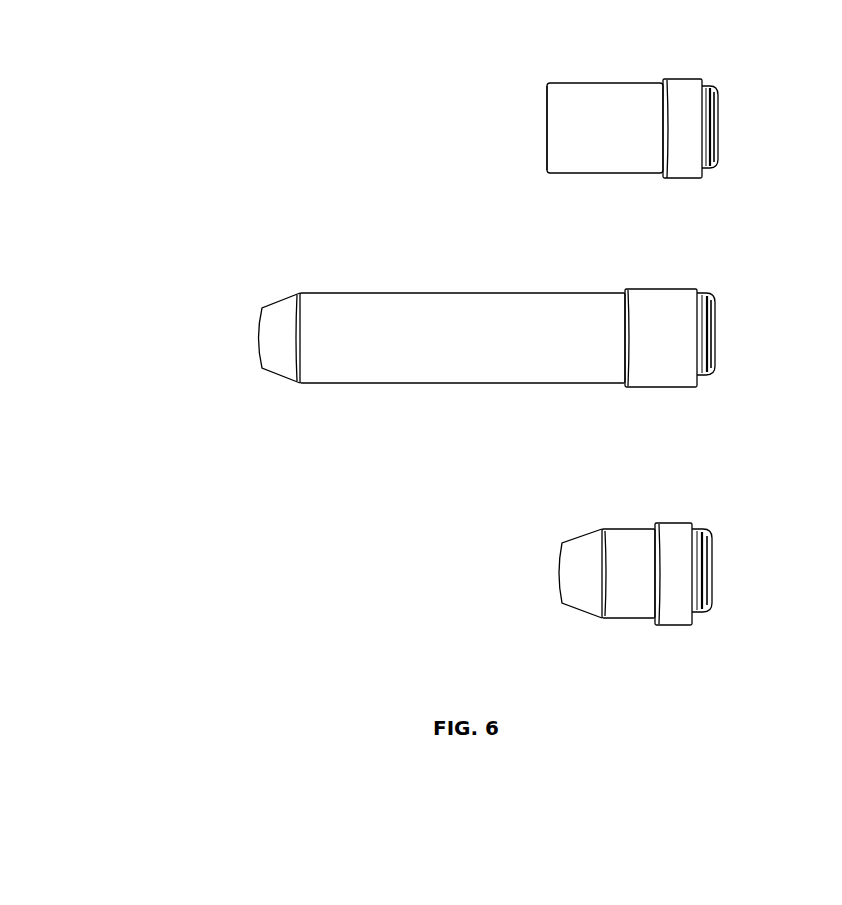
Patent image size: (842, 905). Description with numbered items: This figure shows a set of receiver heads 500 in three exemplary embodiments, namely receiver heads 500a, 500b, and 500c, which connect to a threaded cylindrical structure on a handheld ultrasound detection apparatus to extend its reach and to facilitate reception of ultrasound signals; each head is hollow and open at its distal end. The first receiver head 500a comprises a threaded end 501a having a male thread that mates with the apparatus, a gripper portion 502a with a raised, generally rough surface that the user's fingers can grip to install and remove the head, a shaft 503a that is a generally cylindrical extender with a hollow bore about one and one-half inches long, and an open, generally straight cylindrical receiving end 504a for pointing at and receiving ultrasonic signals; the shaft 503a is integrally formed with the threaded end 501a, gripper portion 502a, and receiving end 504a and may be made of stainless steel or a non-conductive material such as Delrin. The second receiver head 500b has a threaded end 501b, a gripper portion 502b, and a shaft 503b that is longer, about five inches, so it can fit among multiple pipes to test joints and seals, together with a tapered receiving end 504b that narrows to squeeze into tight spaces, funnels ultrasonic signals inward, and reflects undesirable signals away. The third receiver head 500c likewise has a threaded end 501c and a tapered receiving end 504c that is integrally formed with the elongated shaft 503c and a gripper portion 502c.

The receiver heads 500 is at (111, 97).
The receiver head 500a is at (728, 78).
The receiver head 500b is at (734, 293).
The receiver head 500c is at (734, 526).
The threaded end 501a is at (707, 167).
The threaded end 501b is at (707, 377).
The threaded end 501c is at (707, 612).
The gripper portion 502a is at (679, 78).
The gripper portion 502b is at (647, 292).
The gripper portion 502c is at (675, 598).
The shaft 503a is at (577, 90).
The shaft 503b is at (418, 295).
The shaft 503c is at (622, 527).
The receiving end 504a is at (550, 145).
The tapered receiving end 504b is at (262, 342).
The tapered receiving end 504c is at (555, 575).